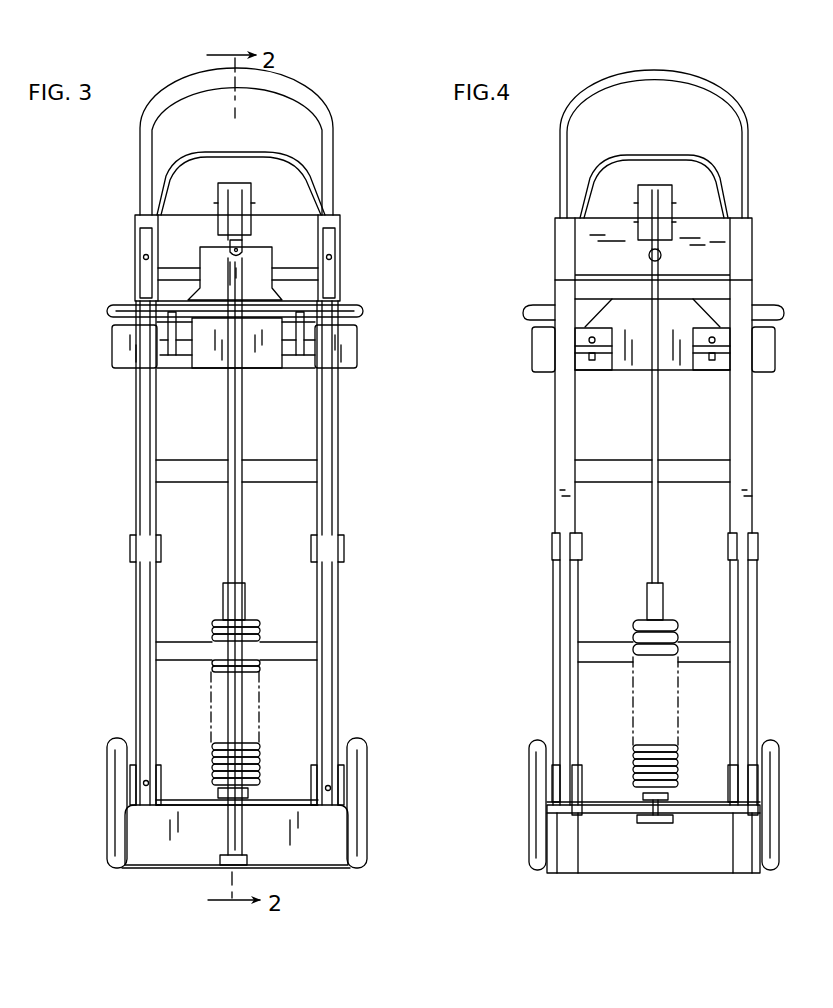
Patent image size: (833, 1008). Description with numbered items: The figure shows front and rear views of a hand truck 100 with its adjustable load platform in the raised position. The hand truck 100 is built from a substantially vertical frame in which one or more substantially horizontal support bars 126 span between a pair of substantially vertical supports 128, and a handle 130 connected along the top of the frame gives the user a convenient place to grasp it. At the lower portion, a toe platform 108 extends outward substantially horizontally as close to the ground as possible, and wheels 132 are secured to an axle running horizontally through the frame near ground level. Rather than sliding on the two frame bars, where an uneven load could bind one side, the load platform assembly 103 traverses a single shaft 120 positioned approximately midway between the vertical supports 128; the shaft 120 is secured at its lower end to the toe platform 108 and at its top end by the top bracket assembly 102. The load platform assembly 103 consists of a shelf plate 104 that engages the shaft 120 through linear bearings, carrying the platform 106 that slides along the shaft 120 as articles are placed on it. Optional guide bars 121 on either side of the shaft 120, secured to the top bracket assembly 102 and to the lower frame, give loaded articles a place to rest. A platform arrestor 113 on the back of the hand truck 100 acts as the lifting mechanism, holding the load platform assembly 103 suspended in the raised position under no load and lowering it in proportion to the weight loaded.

In FIG. 3, the hand truck 100 is at (128, 488).
In FIG. 4, the hand truck 100 is at (548, 494).
In FIG. 3, the top bracket assembly 102 is at (173, 237).
In FIG. 4, the top bracket assembly 102 is at (603, 258).
In FIG. 3, the load platform assembly 103 is at (103, 350).
In FIG. 4, the load platform assembly 103 is at (545, 294).
In FIG. 3, the shelf plate 104 is at (216, 290).
In FIG. 4, the shelf plate 104 is at (526, 346).
In FIG. 3, the platform 106 is at (101, 310).
In FIG. 4, the platform 106 is at (521, 310).
In FIG. 3, the toe platform 108 is at (163, 873).
In FIG. 4, the toe platform 108 is at (598, 876).
In FIG. 3, the platform arrestor 113 is at (196, 714).
In FIG. 4, the platform arrestor 113 is at (613, 720).
In FIG. 3, the shaft 120 is at (224, 422).
In FIG. 4, the shaft 120 is at (655, 416).
In FIG. 3, the guide bars 121 is at (141, 536).
In FIG. 4, the guide bars 121 is at (655, 546).
In FIG. 3, the horizontal support bars 126 is at (186, 658).
In FIG. 4, the horizontal support bars 126 is at (606, 660).
In FIG. 3, the vertical supports 128 is at (131, 597).
In FIG. 4, the vertical supports 128 is at (551, 598).
In FIG. 3, the handle 130 is at (136, 148).
In FIG. 4, the handle 130 is at (556, 140).
In FIG. 3, the wheels 132 is at (101, 783).
In FIG. 4, the wheels 132 is at (525, 780).